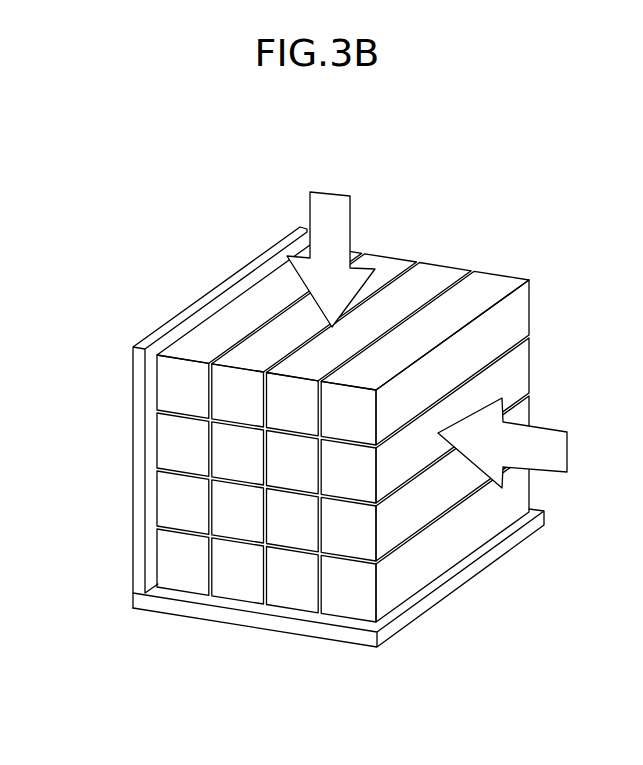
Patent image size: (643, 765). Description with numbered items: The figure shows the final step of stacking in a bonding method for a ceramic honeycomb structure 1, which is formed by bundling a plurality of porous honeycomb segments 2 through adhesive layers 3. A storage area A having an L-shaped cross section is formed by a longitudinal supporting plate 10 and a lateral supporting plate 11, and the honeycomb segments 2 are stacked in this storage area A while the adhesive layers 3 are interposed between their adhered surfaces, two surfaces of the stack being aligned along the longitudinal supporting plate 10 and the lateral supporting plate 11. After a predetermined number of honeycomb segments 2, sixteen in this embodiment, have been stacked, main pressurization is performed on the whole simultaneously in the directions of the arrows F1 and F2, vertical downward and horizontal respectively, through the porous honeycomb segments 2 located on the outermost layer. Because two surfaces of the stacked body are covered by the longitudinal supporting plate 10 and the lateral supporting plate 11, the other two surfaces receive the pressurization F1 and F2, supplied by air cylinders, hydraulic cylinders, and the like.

The ceramic honeycomb structure 1 is at (324, 422).
The porous honeycomb segment 2 is at (170, 487).
The adhesive layer 3 is at (333, 557).
The longitudinal supporting plate 10 is at (132, 487).
The lateral supporting plate 11 is at (182, 610).
The storage area A is at (156, 566).
The arrow indicating main pressurization in vertical downward direction F1 is at (310, 200).
The arrow indicating main pressurization in horizontal direction F2 is at (550, 432).